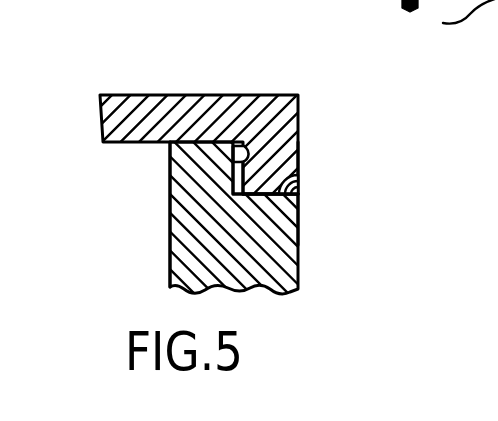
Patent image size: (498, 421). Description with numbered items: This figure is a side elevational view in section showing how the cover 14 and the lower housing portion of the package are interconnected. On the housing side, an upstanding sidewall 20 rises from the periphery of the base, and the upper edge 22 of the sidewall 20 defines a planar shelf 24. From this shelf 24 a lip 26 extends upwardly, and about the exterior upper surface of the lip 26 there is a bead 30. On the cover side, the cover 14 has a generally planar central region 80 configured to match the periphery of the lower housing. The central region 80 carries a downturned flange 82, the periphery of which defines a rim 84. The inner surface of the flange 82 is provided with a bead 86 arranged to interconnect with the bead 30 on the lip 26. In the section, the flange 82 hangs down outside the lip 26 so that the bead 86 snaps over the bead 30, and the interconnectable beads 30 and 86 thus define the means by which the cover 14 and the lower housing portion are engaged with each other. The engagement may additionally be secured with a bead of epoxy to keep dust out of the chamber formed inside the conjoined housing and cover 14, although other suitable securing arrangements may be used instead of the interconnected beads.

The cover 14 is at (226, 165).
The sidewall 20 is at (232, 219).
The upper edge 22 is at (299, 195).
The planar shelf 24 is at (288, 214).
The lip 26 is at (197, 199).
The bead 30 is at (238, 144).
The central region 80 is at (201, 115).
The flange 82 is at (282, 113).
The rim 84 is at (290, 176).
The bead 86 is at (248, 161).